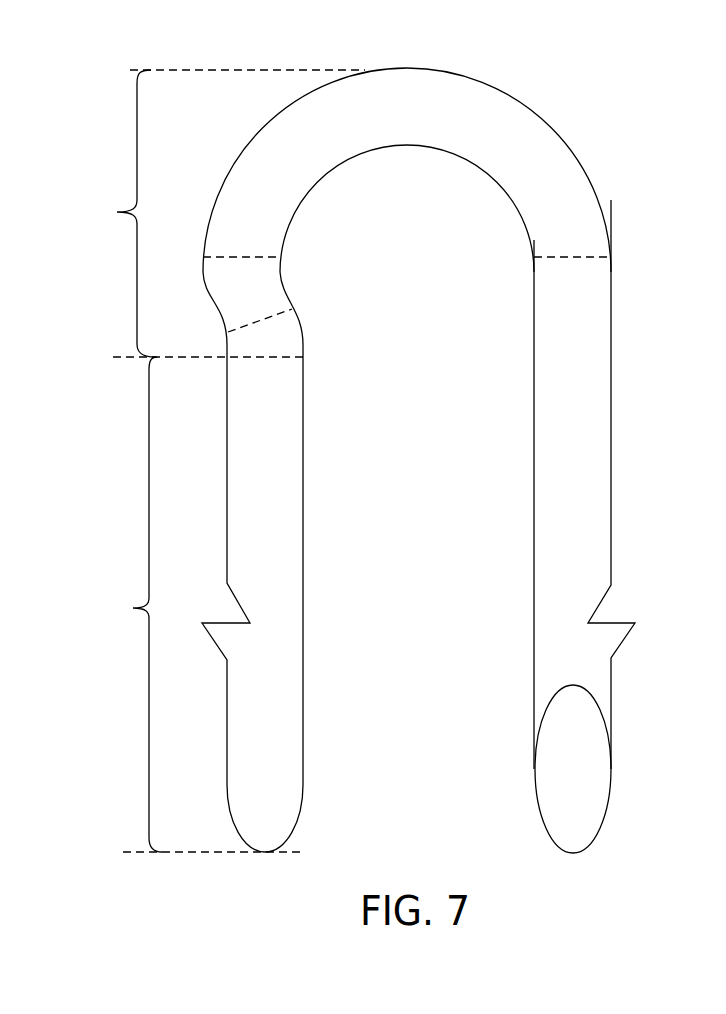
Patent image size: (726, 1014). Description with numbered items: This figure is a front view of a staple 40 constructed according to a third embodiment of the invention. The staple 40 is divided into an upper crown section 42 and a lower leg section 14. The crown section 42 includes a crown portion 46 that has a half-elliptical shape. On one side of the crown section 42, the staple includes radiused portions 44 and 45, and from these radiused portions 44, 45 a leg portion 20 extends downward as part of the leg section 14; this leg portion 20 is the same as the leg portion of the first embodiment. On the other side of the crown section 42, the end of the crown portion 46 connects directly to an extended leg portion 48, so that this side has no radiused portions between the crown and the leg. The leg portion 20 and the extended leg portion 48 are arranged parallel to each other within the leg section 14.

The staple 40 is at (434, 432).
The crown section 42 is at (224, 213).
The leg section 14 is at (205, 604).
The radiused portion 44 is at (242, 337).
The radiused portion 45 is at (223, 310).
The crown portion 46 is at (592, 208).
The extended leg portion 48 is at (593, 480).
The leg portion 20 is at (226, 551).